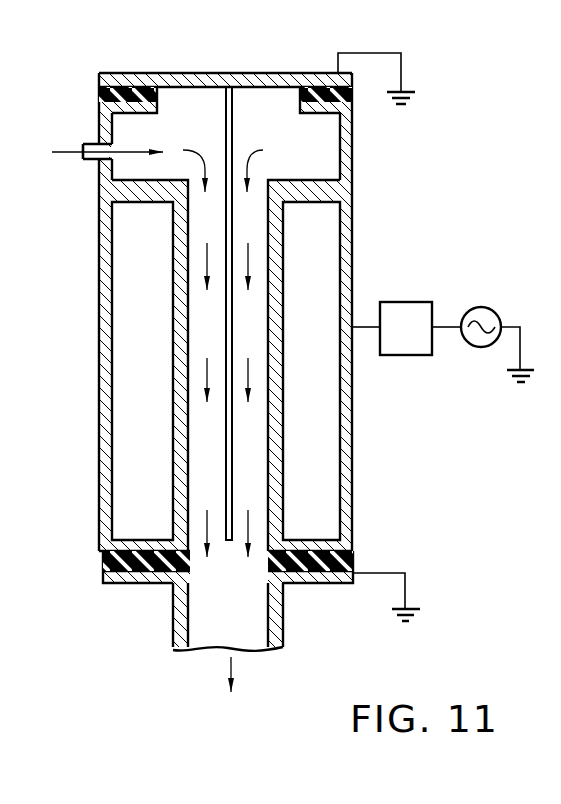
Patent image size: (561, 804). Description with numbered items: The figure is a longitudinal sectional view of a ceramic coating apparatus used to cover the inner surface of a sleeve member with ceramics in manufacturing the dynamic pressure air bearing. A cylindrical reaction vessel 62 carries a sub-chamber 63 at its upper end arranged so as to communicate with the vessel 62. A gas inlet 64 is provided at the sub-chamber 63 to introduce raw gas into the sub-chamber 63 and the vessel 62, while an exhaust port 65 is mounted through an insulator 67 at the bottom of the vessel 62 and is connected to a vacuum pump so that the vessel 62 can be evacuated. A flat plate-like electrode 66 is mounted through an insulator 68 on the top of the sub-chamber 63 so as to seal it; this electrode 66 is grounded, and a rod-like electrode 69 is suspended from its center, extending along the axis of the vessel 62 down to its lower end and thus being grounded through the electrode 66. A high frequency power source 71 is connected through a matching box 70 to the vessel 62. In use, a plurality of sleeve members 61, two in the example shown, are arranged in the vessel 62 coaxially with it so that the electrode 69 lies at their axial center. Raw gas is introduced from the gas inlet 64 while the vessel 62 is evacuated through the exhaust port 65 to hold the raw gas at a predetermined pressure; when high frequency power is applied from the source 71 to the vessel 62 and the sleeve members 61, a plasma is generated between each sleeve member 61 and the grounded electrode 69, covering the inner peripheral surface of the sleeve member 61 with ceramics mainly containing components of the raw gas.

The sleeve member 61 is at (283, 277).
The reaction vessel 62 is at (345, 257).
The sub-chamber 63 is at (352, 153).
The gas inlet 64 is at (83, 143).
The exhaust port 65 is at (175, 622).
The flat plate-like electrode 66 is at (213, 73).
The insulator 67 is at (345, 555).
The insulator 68 is at (99, 97).
The rod-like electrode 69 is at (233, 452).
The matching box 70 is at (413, 355).
The high frequency power source 71 is at (481, 347).